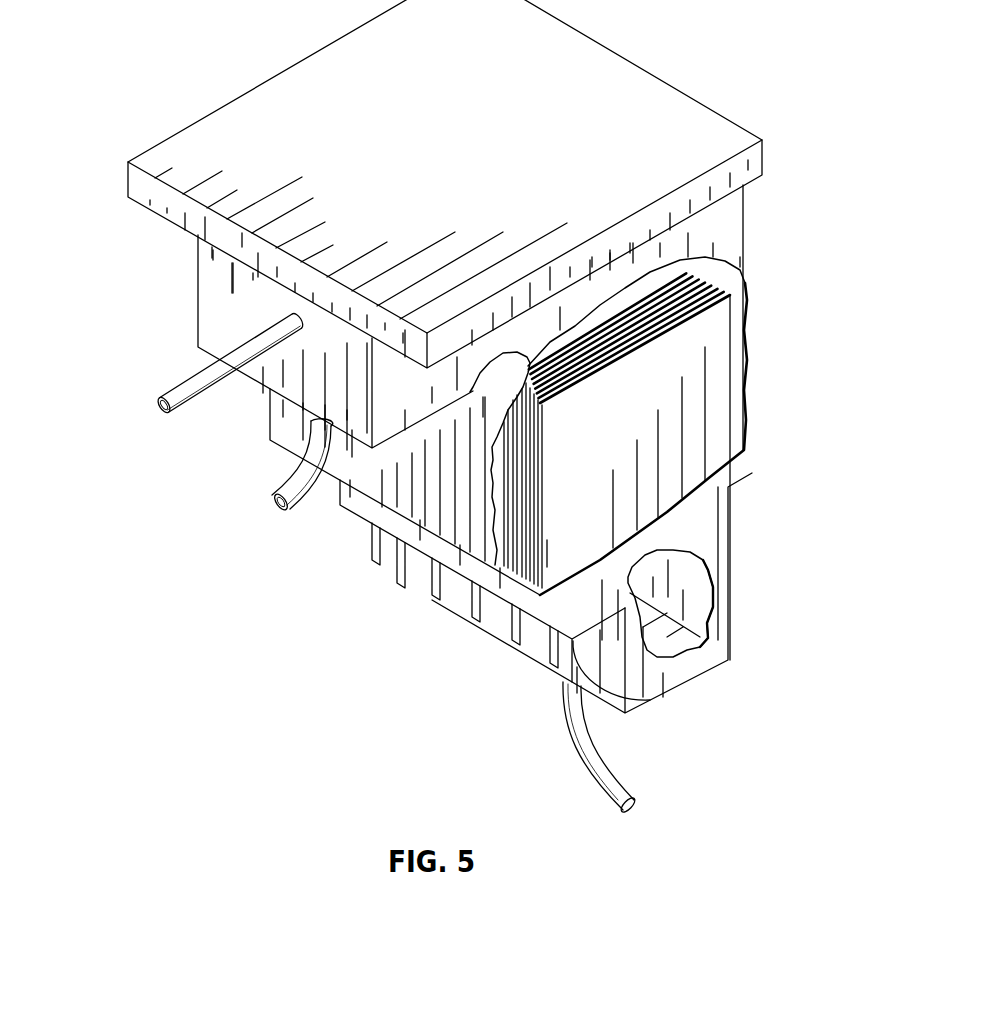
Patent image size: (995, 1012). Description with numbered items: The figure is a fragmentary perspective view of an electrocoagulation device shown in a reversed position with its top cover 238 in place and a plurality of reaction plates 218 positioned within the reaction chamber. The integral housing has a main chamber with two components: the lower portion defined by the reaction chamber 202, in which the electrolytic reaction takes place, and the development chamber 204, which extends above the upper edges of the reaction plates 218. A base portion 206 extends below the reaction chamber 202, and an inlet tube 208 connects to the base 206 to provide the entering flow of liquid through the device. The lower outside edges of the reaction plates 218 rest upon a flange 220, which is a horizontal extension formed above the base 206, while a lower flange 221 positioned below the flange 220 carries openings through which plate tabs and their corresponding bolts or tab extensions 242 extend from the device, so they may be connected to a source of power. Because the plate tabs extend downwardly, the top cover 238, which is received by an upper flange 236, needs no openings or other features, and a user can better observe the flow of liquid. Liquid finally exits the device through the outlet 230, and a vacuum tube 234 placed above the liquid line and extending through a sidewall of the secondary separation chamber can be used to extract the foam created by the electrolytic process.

The top cover 238 is at (331, 70).
The upper flange 236 is at (126, 178).
The development chamber 204 is at (763, 172).
The reaction chamber 202 is at (765, 283).
The flange 220 is at (618, 548).
The reaction plates 218 is at (667, 293).
The vacuum tube 234 is at (157, 414).
The outlet 230 is at (292, 476).
The bolts or tab extensions 242 is at (433, 594).
The base portion 206 is at (712, 664).
The lower flange 221 is at (648, 699).
The inlet tube 208 is at (600, 764).